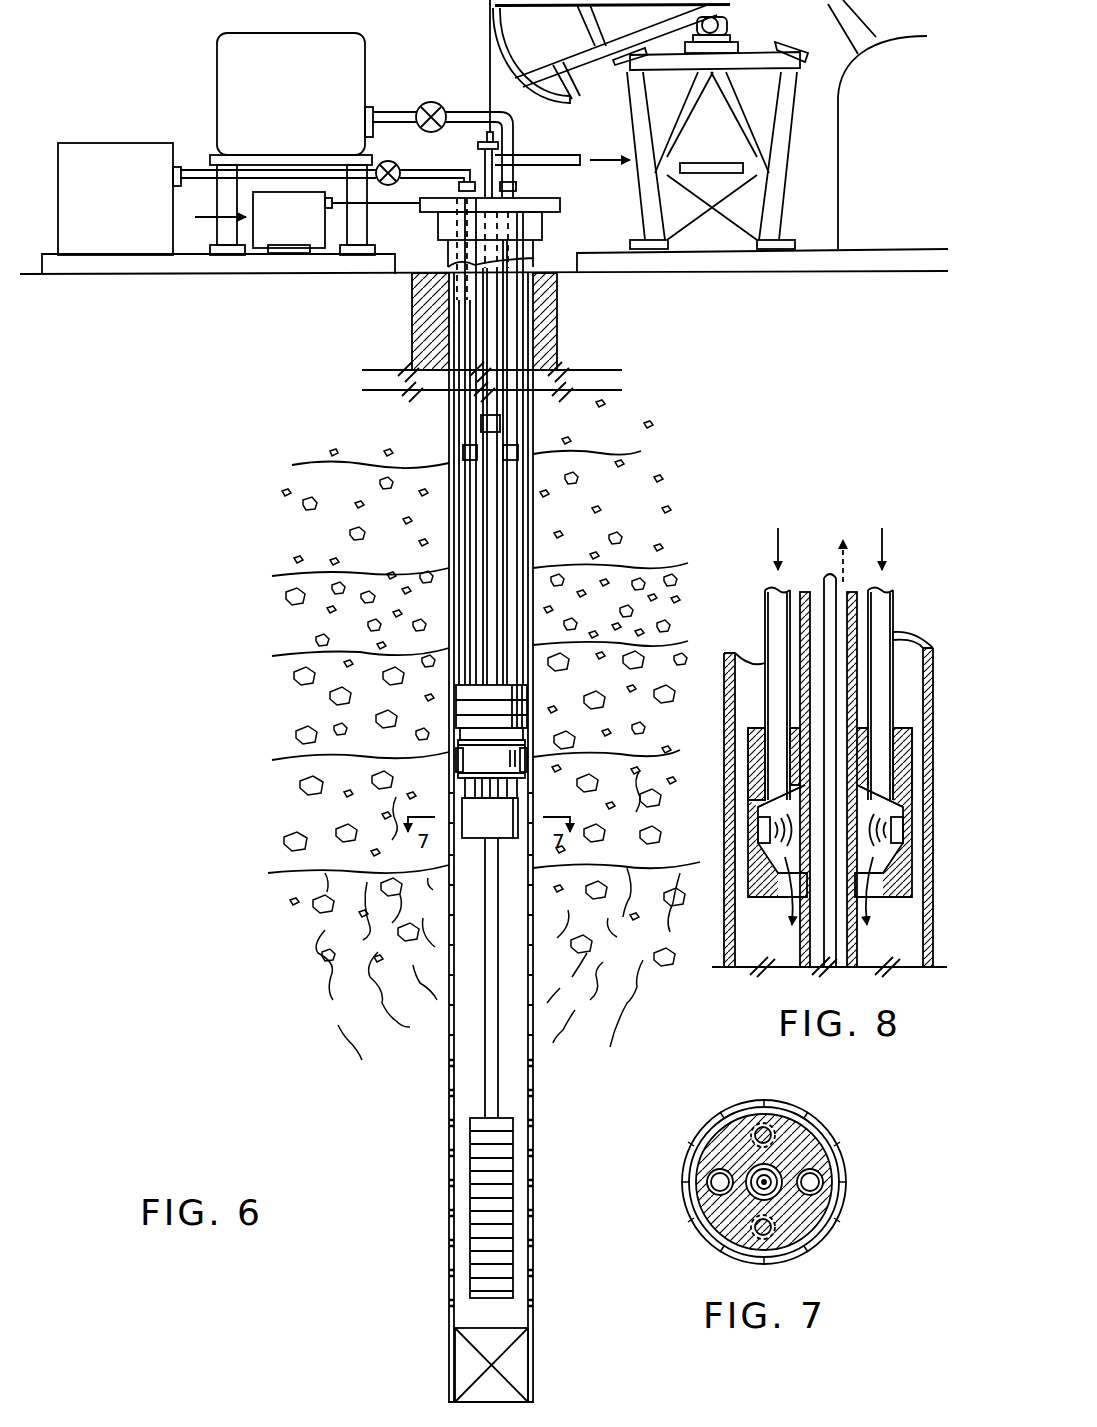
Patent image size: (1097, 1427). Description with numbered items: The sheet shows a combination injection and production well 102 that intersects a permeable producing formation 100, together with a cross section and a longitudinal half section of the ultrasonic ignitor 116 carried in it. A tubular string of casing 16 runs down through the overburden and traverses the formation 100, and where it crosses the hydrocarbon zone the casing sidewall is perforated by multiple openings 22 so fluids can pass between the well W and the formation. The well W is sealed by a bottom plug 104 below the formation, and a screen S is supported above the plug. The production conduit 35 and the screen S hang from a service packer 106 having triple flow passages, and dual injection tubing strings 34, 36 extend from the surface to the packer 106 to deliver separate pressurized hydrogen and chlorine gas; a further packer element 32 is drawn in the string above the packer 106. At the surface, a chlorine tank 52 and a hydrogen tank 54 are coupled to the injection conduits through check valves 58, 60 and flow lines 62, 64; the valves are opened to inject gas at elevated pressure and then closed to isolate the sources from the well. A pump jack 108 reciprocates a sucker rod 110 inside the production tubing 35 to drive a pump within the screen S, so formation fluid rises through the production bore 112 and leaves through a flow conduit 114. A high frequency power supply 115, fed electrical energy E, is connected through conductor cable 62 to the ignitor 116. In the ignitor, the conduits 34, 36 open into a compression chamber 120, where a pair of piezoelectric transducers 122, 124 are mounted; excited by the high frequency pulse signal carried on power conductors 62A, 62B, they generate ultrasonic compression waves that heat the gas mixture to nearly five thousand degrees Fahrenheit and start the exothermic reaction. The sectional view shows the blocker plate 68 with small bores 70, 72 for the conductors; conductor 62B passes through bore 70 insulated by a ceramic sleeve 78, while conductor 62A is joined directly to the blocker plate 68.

In FIG. 6, the chlorine tank 52 is at (223, 67).
In FIG. 6, the hydrogen tank 54 is at (78, 150).
In FIG. 6, the check valve 58 is at (436, 107).
In FIG. 6, the check valve 60 is at (392, 162).
In FIG. 6, the flow line / conductor cable 62 is at (377, 112).
In FIG. 6, the flow line 64 is at (457, 168).
In FIG. 6, the combination injection and production well 102 is at (452, 55).
In FIG. 6, the pump jack 108 is at (756, 24).
In FIG. 6, the sucker rod 110 is at (498, 138).
In FIG. 8, the sucker rod 110 is at (828, 608).
In FIG. 7, the sucker rod 110 is at (752, 1177).
In FIG. 6, the flow conduit 114 is at (578, 163).
In FIG. 6, the high frequency power supply 115 is at (293, 235).
In FIG. 6, the electrical energy E is at (202, 218).
In FIG. 6, the casing 16 is at (543, 320).
In FIG. 8, the casing 16 is at (720, 958).
In FIG. 7, the casing 16 is at (838, 1148).
In FIG. 6, the production conduit 35 is at (490, 513).
In FIG. 8, the production conduit 35 is at (802, 617).
In FIG. 7, the production conduit 35 is at (748, 1195).
In FIG. 6, the injection tubing string 36 is at (468, 558).
In FIG. 8, the injection tubing string 36 is at (777, 625).
In FIG. 7, the injection tubing string 36 is at (708, 1183).
In FIG. 6, the injection tubing string 34 is at (510, 562).
In FIG. 8, the injection tubing string 34 is at (887, 657).
In FIG. 7, the injection tubing string 34 is at (823, 1180).
In FIG. 6, the packer 32 is at (508, 708).
In FIG. 6, the service packer 106 is at (482, 762).
In FIG. 6, the ultrasonic ignitor 116 is at (482, 822).
In FIG. 8, the ultrasonic ignitor 116 is at (746, 775).
In FIG. 7, the ultrasonic ignitor 116 is at (723, 1143).
In FIG. 6, the permeable producing formation 100 is at (316, 974).
In FIG. 6, the well W is at (522, 969).
In FIG. 6, the screen S is at (505, 1172).
In FIG. 6, the openings 22 is at (450, 1123).
In FIG. 6, the bottom plug 104 is at (517, 1362).
In FIG. 8, the blocker plate 68 is at (758, 752).
In FIG. 8, the production bore 112 is at (843, 623).
In FIG. 7, the production bore 112 is at (770, 1193).
In FIG. 8, the compression chamber 120 is at (775, 858).
In FIG. 8, the piezoelectric transducer 122 is at (762, 827).
In FIG. 8, the piezoelectric transducer 124 is at (893, 828).
In FIG. 7, the power conductor 62A is at (777, 1227).
In FIG. 7, the power conductor 62B is at (768, 1130).
In FIG. 7, the small bore 70 is at (778, 1135).
In FIG. 7, the small bore 72 is at (755, 1230).
In FIG. 7, the ceramic sleeve 78 is at (755, 1122).